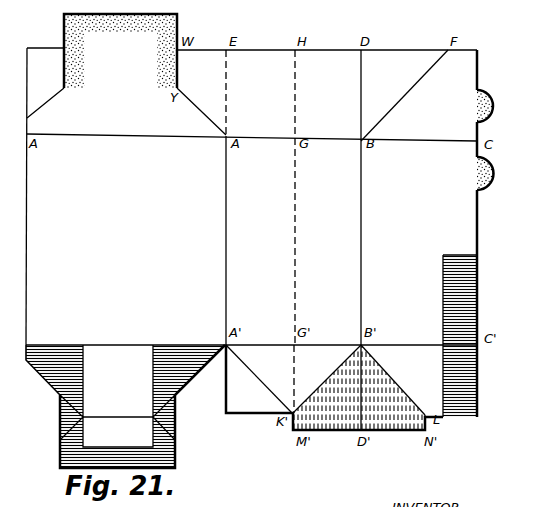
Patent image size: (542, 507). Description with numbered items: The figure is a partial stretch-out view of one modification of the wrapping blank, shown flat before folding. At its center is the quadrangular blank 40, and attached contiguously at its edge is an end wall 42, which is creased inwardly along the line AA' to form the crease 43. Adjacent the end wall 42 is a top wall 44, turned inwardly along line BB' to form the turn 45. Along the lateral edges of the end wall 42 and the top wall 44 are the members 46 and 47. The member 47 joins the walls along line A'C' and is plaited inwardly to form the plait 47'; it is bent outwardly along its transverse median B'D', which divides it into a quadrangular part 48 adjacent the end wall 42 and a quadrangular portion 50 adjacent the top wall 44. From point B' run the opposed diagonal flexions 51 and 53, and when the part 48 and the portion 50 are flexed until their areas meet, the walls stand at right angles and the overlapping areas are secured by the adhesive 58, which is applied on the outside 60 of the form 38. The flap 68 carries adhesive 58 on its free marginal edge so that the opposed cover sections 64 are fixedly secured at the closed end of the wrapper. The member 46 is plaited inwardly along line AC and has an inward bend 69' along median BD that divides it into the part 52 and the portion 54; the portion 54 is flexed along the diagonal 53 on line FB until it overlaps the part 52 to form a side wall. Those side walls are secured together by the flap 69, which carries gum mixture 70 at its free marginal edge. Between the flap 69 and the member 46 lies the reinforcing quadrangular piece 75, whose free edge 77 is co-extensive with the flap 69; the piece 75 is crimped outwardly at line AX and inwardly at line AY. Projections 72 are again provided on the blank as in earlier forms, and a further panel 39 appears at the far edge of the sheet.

The form 38 is at (319, 431).
The side wall panel 39 is at (7, 413).
The quadrangular blank 40 is at (251, 196).
The end wall 42 is at (247, 240).
The crease 43 is at (225, 262).
The top wall 44 is at (386, 243).
The turn 45 is at (375, 298).
The member 46 is at (390, 23).
The member 47 is at (352, 463).
The plait 47' is at (251, 330).
The quadrangular part 48 is at (260, 379).
The quadrangular portion 50 is at (422, 408).
The diagonal flexion 51 is at (330, 380).
The part 52 is at (277, 197).
The diagonal flexion 53 is at (419, 82).
The portion 54 is at (449, 86).
The adhesive 58 is at (462, 308).
The outside 60 is at (37, 312).
The cover section 64 is at (492, 328).
The flap 68 is at (142, 406).
The flap 69 is at (126, 74).
The inward bend 69' is at (404, 95).
The gum mixture 70 is at (177, 23).
The projection 72 is at (491, 94).
The quadrangular piece 75 is at (201, 67).
The free edge 77 is at (182, 62).